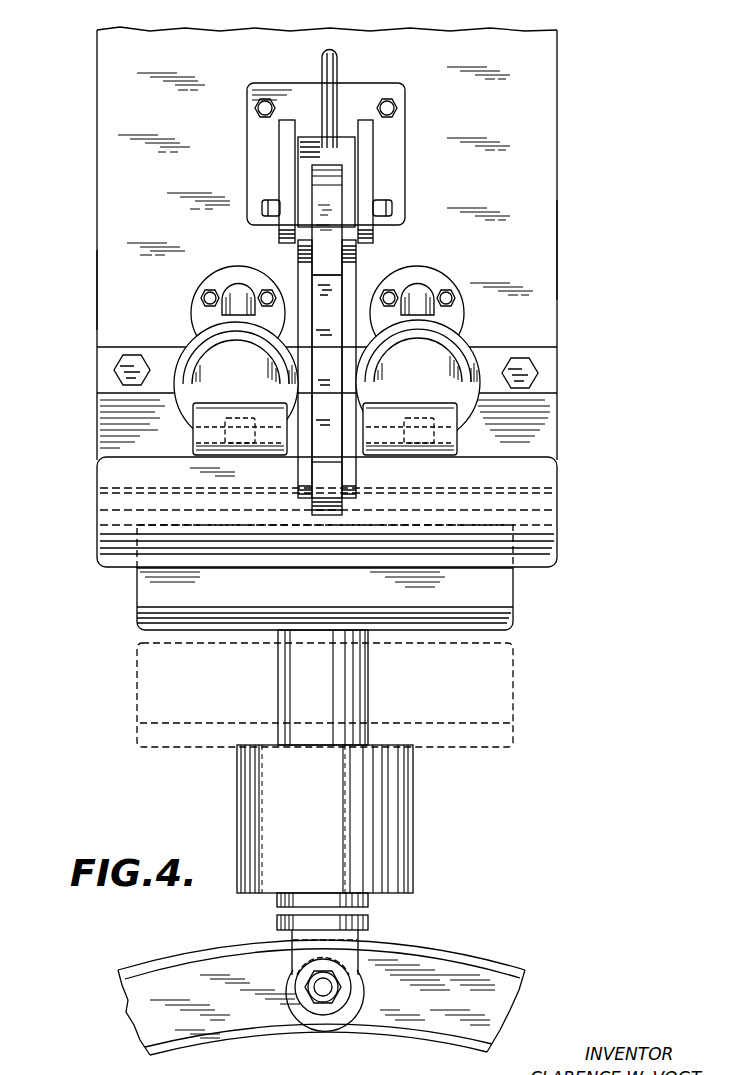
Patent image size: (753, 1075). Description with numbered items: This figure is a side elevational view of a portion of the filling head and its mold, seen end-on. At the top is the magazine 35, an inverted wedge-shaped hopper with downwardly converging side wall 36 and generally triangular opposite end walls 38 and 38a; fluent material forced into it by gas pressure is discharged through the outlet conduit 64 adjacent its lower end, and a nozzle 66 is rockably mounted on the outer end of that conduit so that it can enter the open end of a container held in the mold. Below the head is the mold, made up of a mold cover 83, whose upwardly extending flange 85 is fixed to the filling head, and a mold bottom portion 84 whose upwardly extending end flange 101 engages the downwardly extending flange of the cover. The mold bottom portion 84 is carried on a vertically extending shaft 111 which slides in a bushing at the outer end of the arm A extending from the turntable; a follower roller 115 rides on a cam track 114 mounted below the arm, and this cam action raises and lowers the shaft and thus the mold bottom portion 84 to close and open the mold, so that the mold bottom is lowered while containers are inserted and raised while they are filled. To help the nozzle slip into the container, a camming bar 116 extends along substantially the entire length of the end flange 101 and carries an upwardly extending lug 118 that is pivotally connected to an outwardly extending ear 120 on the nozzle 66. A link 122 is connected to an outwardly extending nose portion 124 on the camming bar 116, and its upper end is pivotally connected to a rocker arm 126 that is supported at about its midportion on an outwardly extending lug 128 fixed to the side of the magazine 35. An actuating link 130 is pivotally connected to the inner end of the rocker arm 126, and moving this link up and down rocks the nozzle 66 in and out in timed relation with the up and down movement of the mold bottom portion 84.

The magazine 35 is at (87, 247).
The side wall 36 is at (105, 180).
The end wall 38 is at (97, 284).
The end wall 38a is at (560, 247).
The upwardly extending flange 85 is at (112, 368).
The actuating link 130 is at (322, 70).
The outwardly extending lug 128 is at (286, 168).
The rocker arm 126 is at (336, 190).
The nose portion 124 is at (320, 478).
The link 122 is at (300, 278).
The outlet conduit 64 is at (238, 303).
The nozzle 66 is at (244, 394).
The ear 120 is at (196, 436).
The lug 118 is at (242, 448).
The mold cover 83 is at (105, 477).
The camming bar 116 is at (558, 478).
The mold bottom portion 84 is at (143, 600).
The end flange 101 is at (497, 586).
The shaft 111 is at (300, 685).
The arm A is at (405, 832).
The follower roller 115 is at (323, 1026).
The cam track 114 is at (237, 1020).